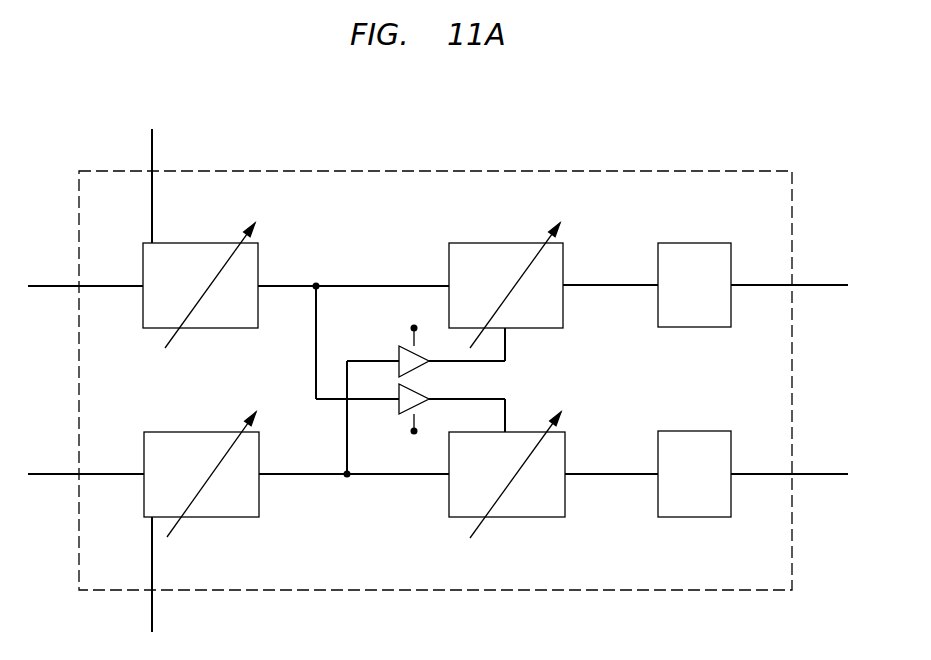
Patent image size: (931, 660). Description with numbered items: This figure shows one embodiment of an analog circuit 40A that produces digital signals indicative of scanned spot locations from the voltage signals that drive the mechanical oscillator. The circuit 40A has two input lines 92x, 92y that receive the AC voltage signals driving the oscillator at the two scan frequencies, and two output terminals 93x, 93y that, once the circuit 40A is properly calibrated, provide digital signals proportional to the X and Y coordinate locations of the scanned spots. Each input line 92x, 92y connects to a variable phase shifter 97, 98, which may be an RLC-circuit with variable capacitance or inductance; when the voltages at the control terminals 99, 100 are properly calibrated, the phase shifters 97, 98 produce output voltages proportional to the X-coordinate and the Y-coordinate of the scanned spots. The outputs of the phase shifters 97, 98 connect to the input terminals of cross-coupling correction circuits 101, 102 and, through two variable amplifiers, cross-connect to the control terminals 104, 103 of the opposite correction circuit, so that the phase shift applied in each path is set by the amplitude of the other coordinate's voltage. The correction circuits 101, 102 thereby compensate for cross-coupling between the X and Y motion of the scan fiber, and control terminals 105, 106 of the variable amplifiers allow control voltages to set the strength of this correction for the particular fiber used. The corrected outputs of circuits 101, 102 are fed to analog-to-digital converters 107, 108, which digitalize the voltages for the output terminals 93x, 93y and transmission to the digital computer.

The analog circuit 40A is at (370, 171).
The variable phase shifter 97 is at (258, 250).
The variable phase shifter 98 is at (259, 440).
The control terminal 99 is at (152, 214).
The control terminal 100 is at (152, 548).
The input line 92x is at (62, 286).
The input line 92y is at (62, 474).
The cross-coupling correction circuit 101 is at (563, 250).
The cross-coupling correction circuit 102 is at (565, 440).
The control terminal 103 is at (505, 412).
The control terminal 104 is at (505, 345).
The control terminal 105 is at (409, 328).
The control terminal 106 is at (409, 436).
The analog-to-digital converter 107 is at (731, 248).
The analog-to-digital converter 108 is at (731, 436).
The output terminal 93x is at (820, 285).
The output terminal 93y is at (820, 474).